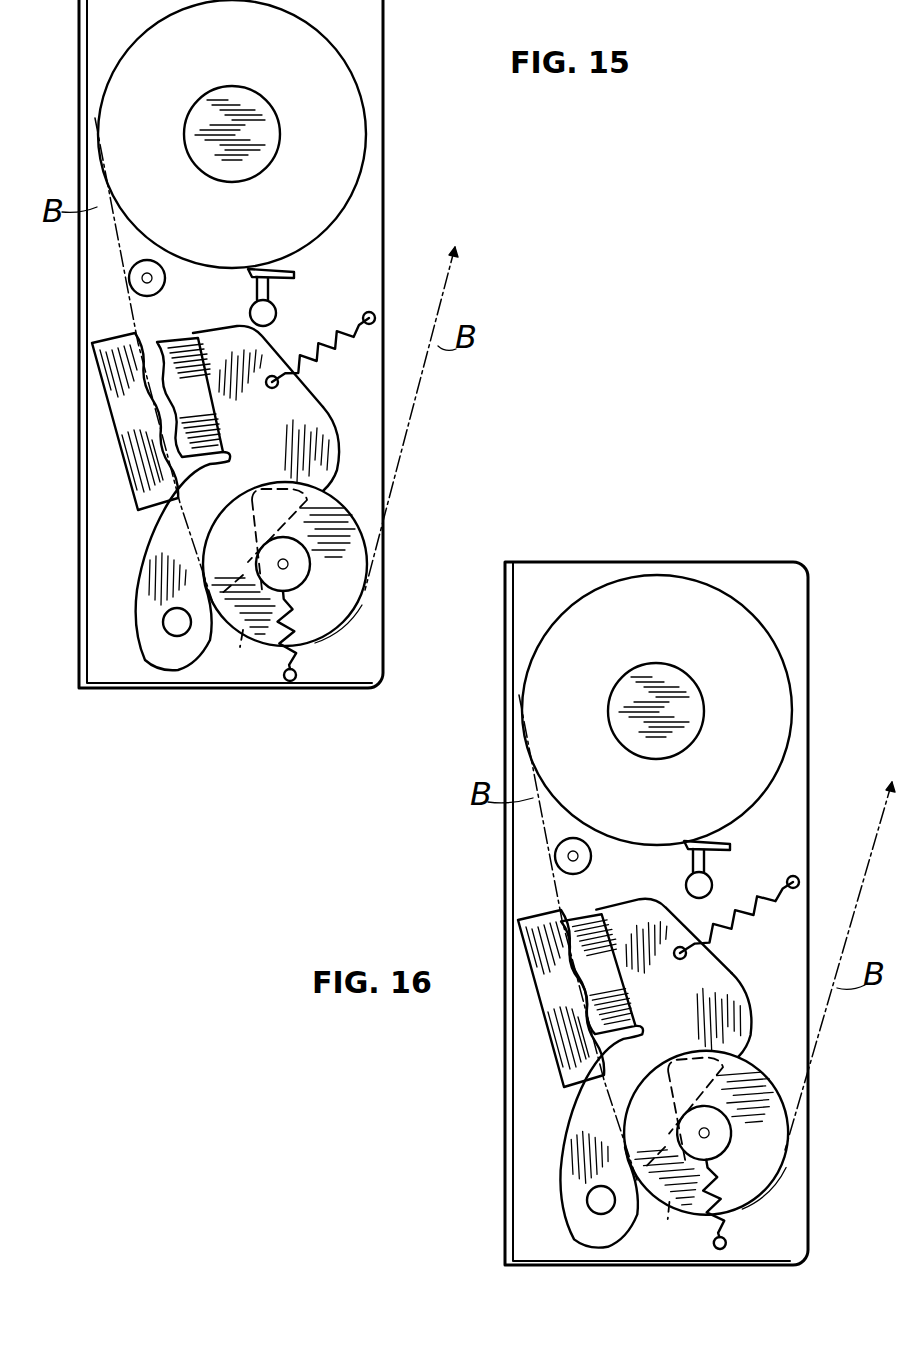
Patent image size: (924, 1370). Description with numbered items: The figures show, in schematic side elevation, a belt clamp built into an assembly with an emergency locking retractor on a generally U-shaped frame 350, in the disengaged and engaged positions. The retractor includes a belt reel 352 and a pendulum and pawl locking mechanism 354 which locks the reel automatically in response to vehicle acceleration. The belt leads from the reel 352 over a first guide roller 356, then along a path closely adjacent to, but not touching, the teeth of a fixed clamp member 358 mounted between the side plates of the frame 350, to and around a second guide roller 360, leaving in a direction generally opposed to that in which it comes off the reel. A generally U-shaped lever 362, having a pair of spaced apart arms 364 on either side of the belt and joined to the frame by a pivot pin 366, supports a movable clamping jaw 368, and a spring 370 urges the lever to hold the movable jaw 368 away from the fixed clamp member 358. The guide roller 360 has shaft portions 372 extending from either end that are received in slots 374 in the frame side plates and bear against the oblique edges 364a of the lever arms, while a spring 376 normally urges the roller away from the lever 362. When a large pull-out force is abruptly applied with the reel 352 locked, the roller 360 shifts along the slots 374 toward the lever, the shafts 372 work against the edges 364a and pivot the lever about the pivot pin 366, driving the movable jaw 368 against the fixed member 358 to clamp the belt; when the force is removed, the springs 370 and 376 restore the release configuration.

In FIG. 15, the frame 350 is at (388, 210).
In FIG. 16, the frame 350 is at (811, 757).
In FIG. 15, the belt reel 352 is at (277, 110).
In FIG. 16, the belt reel 352 is at (692, 678).
In FIG. 15, the pendulum and pawl locking mechanism 354 is at (281, 295).
In FIG. 16, the pendulum and pawl locking mechanism 354 is at (722, 870).
In FIG. 15, the first guide roller 356 is at (165, 279).
In FIG. 16, the first guide roller 356 is at (591, 857).
In FIG. 15, the fixed clamp member 358 is at (128, 350).
In FIG. 16, the fixed clamp member 358 is at (530, 922).
In FIG. 15, the second guide roller 360 is at (367, 552).
In FIG. 16, the second guide roller 360 is at (791, 1127).
In FIG. 15, the lever 362 is at (325, 404).
In FIG. 16, the lever 362 is at (733, 976).
In FIG. 15, the lever arms 364 is at (360, 458).
In FIG. 16, the lever arms 364 is at (757, 1021).
In FIG. 15, the edges of the lever arms 364a is at (205, 569).
In FIG. 16, the edges of the lever arms 364a is at (624, 1138).
In FIG. 15, the pivot pin 366 is at (168, 620).
In FIG. 16, the pivot pin 366 is at (593, 1196).
In FIG. 15, the movable clamping jaw 368 is at (175, 341).
In FIG. 16, the movable clamping jaw 368 is at (590, 916).
In FIG. 15, the spring 370 is at (341, 330).
In FIG. 16, the spring 370 is at (761, 879).
In FIG. 15, the shaft portions 372 is at (303, 582).
In FIG. 16, the shaft portions 372 is at (728, 1143).
In FIG. 15, the slots 374 is at (317, 510).
In FIG. 16, the slots 374 is at (733, 1082).
In FIG. 15, the spring 376 is at (300, 625).
In FIG. 16, the spring 376 is at (723, 1210).